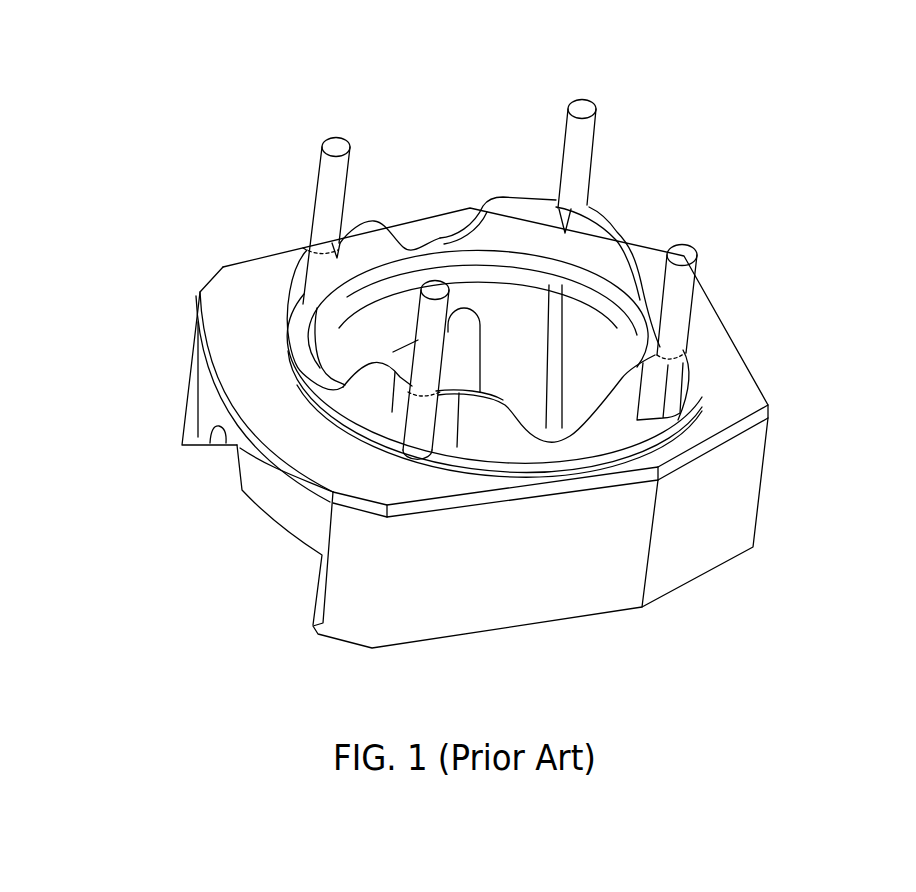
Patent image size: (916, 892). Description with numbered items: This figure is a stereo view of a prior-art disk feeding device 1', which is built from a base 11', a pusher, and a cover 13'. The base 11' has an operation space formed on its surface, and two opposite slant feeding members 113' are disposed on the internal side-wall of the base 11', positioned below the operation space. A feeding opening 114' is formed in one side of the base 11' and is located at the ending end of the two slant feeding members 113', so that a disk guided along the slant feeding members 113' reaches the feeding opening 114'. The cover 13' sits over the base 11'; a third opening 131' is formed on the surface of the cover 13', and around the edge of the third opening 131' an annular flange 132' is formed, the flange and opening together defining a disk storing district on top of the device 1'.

The disk feeding device 1' is at (491, 339).
The base 11' is at (512, 428).
The cover 13' is at (453, 279).
The third opening 131' is at (478, 216).
The annular flange 132' is at (550, 225).
The slant feeding members 113' is at (590, 270).
The feeding opening 114' is at (234, 535).